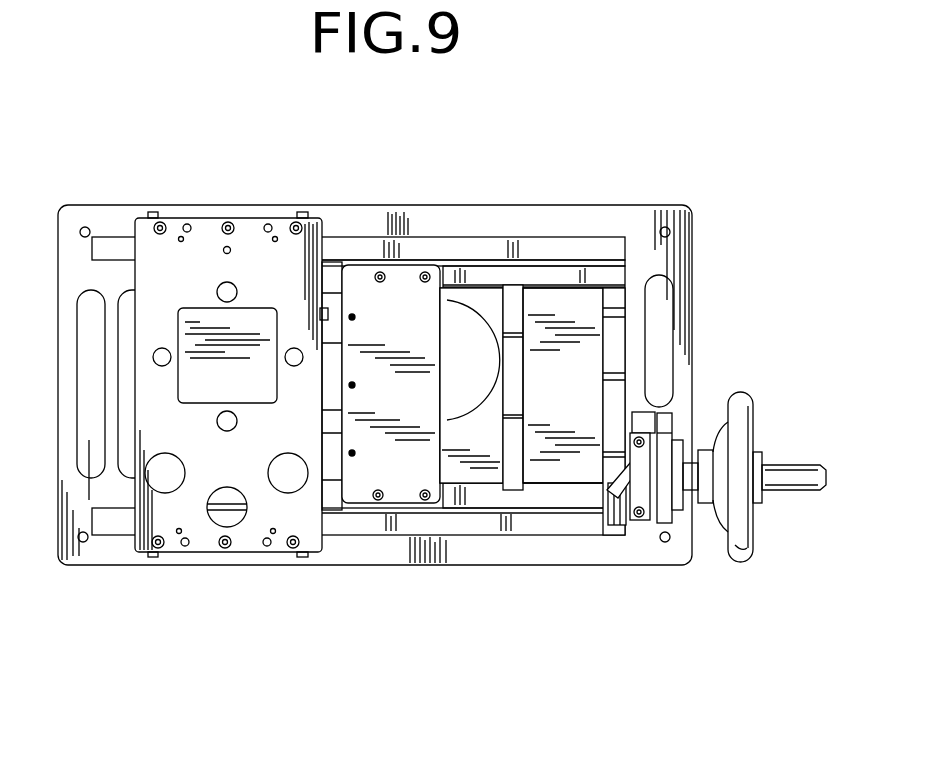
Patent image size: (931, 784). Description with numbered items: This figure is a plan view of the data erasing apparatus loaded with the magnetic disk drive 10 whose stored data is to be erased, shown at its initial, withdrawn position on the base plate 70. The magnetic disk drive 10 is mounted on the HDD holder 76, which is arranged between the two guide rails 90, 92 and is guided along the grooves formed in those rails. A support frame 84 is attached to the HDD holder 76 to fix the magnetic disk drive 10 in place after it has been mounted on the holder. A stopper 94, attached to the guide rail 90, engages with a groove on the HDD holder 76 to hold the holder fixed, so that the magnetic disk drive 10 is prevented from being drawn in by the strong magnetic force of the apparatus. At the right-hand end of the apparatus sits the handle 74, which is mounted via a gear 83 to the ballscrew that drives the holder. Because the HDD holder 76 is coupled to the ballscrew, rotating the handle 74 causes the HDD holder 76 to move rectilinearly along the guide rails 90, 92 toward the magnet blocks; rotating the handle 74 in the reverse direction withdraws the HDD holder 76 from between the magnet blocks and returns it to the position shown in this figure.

The base plate 70 is at (105, 550).
The HDD holder 76 is at (448, 278).
The magnetic disk drive 10 is at (488, 300).
The guide rail 92 is at (584, 247).
The guide rail 90 is at (470, 525).
The support frame 84 is at (518, 465).
The stopper 94 is at (632, 517).
The gear 83 is at (651, 520).
The handle 74 is at (737, 535).